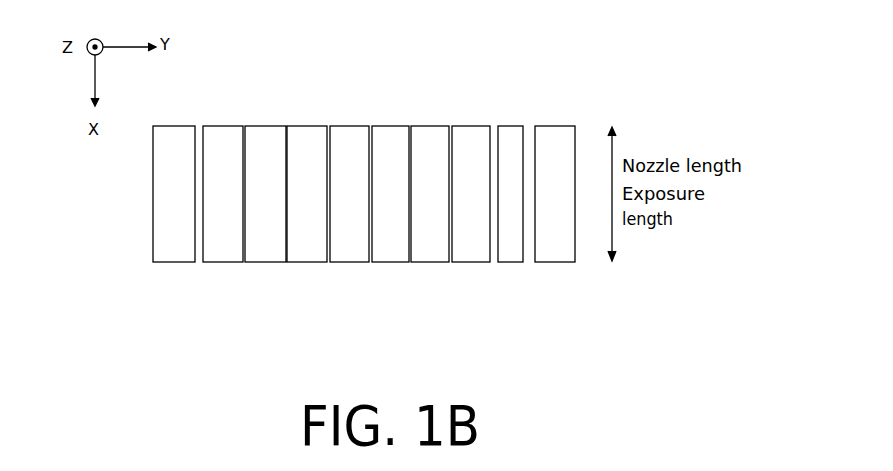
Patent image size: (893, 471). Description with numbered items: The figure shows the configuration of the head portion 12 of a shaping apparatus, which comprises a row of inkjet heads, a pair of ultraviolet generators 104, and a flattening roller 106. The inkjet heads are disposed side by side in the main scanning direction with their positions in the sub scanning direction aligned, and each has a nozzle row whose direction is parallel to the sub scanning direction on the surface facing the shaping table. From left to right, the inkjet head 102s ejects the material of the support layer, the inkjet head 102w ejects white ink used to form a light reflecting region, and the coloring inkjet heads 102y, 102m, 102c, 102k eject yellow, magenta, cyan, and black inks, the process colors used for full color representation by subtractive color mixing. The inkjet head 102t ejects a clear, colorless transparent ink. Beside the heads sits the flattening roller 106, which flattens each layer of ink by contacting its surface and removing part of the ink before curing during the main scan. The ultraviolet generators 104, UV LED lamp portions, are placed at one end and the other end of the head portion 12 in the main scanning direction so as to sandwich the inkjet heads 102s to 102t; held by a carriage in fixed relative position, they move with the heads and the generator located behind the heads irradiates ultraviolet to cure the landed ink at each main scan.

The head portion 12 is at (615, 60).
The ultraviolet generator 104 is at (173, 263).
The inkjet head 102s is at (233, 263).
The inkjet head 102w is at (265, 263).
The inkjet head 102y is at (315, 263).
The inkjet head 102m is at (345, 263).
The inkjet head 102c is at (396, 263).
The inkjet head 102k is at (430, 263).
The inkjet head 102t is at (478, 263).
The flattening roller 106 is at (511, 130).